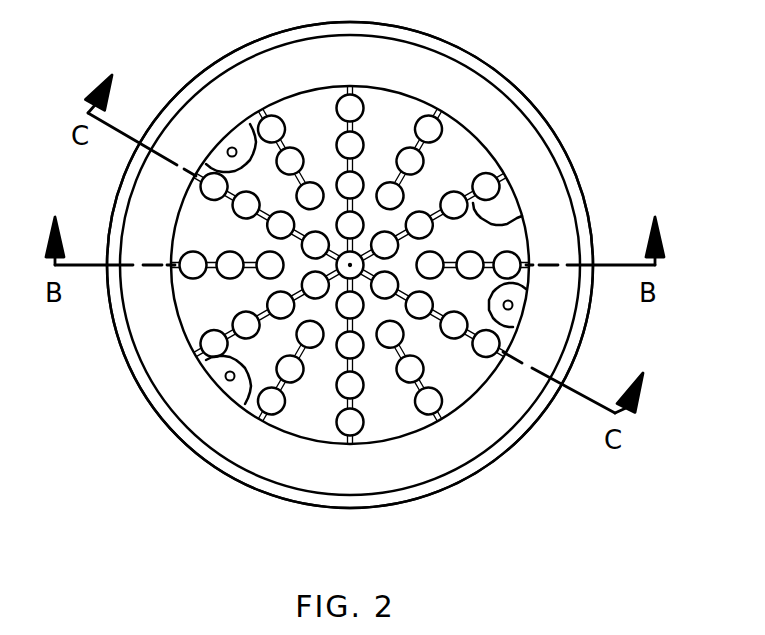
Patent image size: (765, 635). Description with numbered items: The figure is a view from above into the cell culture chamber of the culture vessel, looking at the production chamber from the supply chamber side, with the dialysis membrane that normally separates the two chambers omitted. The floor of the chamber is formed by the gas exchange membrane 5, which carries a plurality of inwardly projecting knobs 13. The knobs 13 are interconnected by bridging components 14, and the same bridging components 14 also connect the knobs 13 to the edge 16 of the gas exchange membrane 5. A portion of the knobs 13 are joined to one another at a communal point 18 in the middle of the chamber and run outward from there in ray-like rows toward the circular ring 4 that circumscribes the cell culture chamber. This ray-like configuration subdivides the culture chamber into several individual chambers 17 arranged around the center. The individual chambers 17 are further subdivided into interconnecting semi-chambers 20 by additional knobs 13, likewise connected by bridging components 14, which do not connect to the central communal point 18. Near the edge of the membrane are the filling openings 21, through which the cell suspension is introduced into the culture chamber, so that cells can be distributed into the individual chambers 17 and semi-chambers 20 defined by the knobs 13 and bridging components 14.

The circular ring 4 is at (208, 452).
The gas exchange membrane 5 is at (206, 310).
The knobs 13 is at (200, 343).
The bridging components 14 is at (485, 260).
The edge of the gas exchange membrane 16 is at (222, 98).
The individual chambers 17 is at (488, 123).
The communal point 18 is at (347, 272).
The interconnecting semi-chambers 20 is at (456, 381).
The filling openings 21 is at (513, 305).